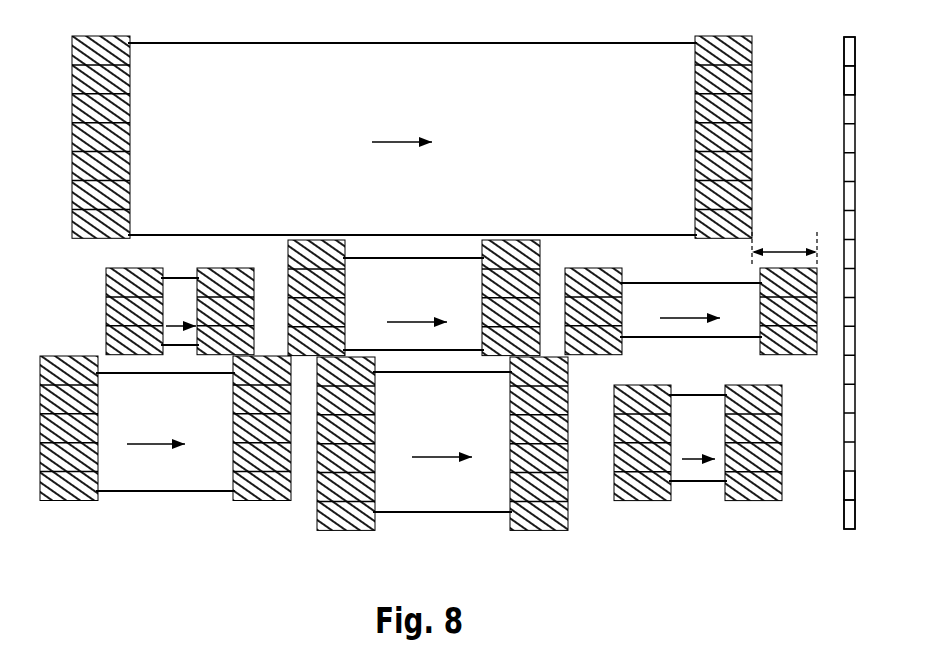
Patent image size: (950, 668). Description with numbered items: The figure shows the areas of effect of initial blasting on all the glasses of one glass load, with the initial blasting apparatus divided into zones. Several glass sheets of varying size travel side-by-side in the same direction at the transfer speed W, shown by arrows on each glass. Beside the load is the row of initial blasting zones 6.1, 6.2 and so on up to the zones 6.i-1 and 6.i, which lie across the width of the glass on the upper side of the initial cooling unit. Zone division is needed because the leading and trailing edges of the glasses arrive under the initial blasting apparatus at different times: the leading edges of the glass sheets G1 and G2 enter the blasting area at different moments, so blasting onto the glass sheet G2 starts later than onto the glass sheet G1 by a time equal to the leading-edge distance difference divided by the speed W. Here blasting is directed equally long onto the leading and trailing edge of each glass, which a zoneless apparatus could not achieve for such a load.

The initial blasting zone 6.1 is at (855, 53).
The initial blasting zone 6.2 is at (855, 84).
The initial blasting zone 6.i-1 is at (855, 484).
The initial blasting zone 6.i is at (855, 516).
The glass sheet G1 is at (691, 311).
The glass sheet G2 is at (412, 137).
The transfer speed W is at (423, 287).